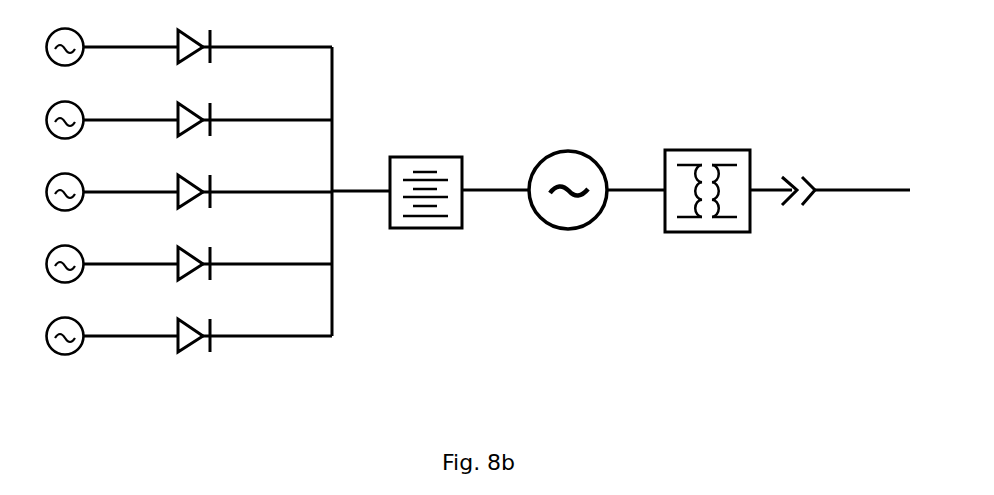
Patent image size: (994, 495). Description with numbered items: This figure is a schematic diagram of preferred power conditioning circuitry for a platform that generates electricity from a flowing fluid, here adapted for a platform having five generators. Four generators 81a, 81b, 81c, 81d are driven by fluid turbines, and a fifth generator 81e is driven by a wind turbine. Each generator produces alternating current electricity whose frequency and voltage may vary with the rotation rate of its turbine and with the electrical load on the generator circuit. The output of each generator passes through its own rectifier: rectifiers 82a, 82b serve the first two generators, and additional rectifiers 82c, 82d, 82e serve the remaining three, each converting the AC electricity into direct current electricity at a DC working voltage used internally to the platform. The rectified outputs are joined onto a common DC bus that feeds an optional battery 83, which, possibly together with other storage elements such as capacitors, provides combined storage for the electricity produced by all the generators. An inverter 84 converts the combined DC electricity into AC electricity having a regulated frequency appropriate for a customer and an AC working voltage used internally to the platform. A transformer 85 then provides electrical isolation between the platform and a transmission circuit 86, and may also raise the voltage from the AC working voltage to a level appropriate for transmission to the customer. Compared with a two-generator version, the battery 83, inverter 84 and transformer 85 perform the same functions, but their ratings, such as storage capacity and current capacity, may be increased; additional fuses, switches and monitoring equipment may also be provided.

The generator 81a is at (88, 33).
The generator 81b is at (88, 106).
The generator 81c is at (87, 178).
The generator 81d is at (83, 257).
The generator 81e is at (85, 323).
The rectifier 82a is at (217, 35).
The rectifier 82b is at (217, 110).
The rectifier 82c is at (215, 183).
The rectifier 82d is at (217, 253).
The rectifier 82e is at (215, 325).
The battery 83 is at (423, 157).
The inverter 84 is at (568, 142).
The transformer 85 is at (703, 143).
The transmission circuit 86 is at (840, 188).